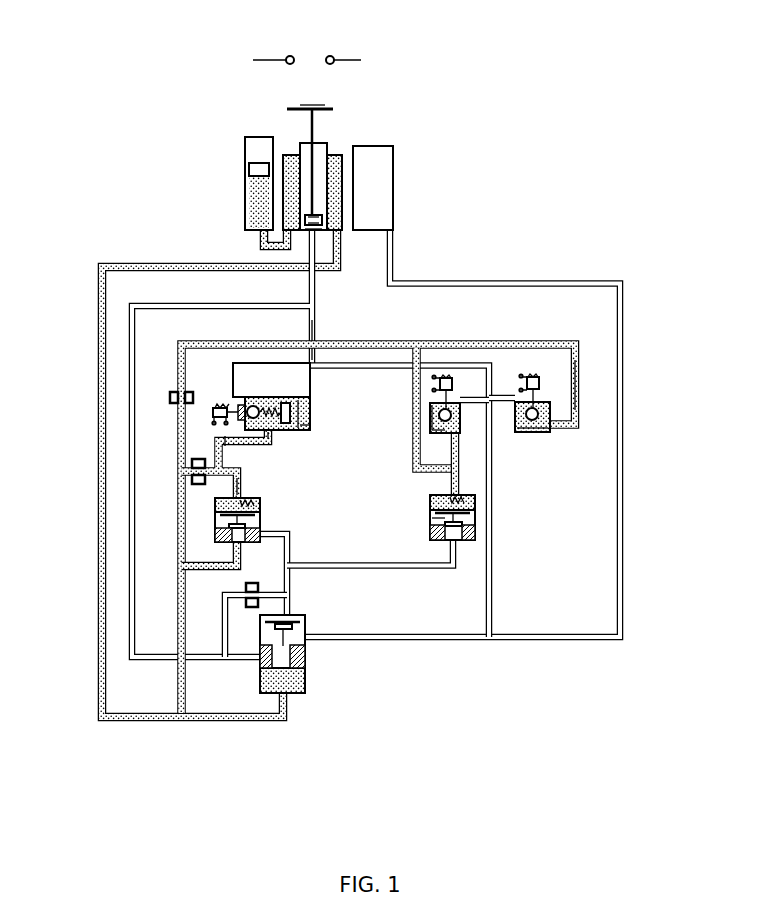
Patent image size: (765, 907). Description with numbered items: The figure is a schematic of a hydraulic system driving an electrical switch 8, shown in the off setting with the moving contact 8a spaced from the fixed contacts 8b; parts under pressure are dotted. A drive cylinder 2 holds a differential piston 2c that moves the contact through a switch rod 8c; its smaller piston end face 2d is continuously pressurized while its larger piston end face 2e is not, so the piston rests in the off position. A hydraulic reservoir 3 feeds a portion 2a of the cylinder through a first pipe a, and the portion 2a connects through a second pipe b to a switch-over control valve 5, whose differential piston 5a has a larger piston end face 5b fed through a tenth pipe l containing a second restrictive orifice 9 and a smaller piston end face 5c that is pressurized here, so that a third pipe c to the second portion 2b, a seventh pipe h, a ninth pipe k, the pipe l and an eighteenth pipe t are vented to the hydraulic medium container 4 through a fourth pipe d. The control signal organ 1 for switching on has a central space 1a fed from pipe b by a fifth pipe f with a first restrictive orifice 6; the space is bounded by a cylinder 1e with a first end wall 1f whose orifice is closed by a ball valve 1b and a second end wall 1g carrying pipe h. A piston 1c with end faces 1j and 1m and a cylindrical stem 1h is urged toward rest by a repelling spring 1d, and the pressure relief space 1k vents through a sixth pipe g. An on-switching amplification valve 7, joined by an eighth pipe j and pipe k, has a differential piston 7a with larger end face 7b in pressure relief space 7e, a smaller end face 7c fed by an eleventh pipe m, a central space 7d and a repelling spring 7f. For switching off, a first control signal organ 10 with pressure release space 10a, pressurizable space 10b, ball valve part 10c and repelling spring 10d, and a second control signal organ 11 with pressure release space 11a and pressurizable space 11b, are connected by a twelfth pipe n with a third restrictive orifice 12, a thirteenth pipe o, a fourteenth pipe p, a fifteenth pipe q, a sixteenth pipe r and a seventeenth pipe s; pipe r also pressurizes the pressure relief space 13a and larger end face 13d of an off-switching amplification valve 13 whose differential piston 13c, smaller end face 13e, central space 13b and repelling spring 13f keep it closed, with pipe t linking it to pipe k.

The control signal organ 1 is at (247, 392).
The central space 1a is at (254, 403).
The ball valve 1b is at (243, 397).
The piston 1c is at (303, 398).
The repelling spring 1d is at (270, 400).
The cylinder 1e is at (266, 440).
The first end wall 1f is at (240, 418).
The second end wall 1g is at (292, 402).
The cylindrical stem 1h is at (272, 446).
The piston end face 1j is at (303, 427).
The pressure relief space 1k is at (212, 412).
The end face 1m is at (290, 432).
The drive cylinder 2 is at (325, 150).
The portion of drive cylinder 2a is at (298, 152).
The second portion of drive cylinder 2b is at (322, 225).
The differential piston 2c is at (320, 221).
The smaller piston end face 2d is at (318, 218).
The larger piston end face 2e is at (320, 231).
The hydraulic reservoir 3 is at (249, 140).
The hydraulic medium container 4 is at (372, 147).
The switch-over control valve 5 is at (303, 652).
The differential piston 5a is at (306, 656).
The larger piston end face 5b is at (300, 622).
The smaller piston end face 5c is at (306, 682).
The first restrictive orifice 6 is at (191, 468).
The on-switching amplification valve 7 is at (219, 527).
The differential piston 7a is at (262, 516).
The larger piston end face 7b is at (222, 514).
The smaller piston end face 7c is at (222, 536).
The central space 7d is at (225, 526).
The pressure relief space 7e is at (258, 506).
The repelling spring 7f is at (245, 503).
The electrical switch 8 is at (388, 100).
The moving contact 8a is at (326, 108).
The fixed contacts 8b is at (287, 56).
The switch rod 8c is at (311, 130).
The second restrictive orifice 9 is at (253, 604).
The first control signal organ 10 is at (443, 380).
The pressure release space 10a is at (457, 402).
The pressurizable space 10b is at (436, 414).
The ball valve part 10c is at (432, 405).
The repelling spring 10d is at (432, 431).
The second control signal organ 11 is at (599, 400).
The pressure release space 11a is at (552, 407).
The pressurizable space 11b is at (552, 428).
The third restrictive orifice 12 is at (172, 392).
The off-switching amplification valve 13 is at (454, 516).
The pressure relief space 13a is at (470, 503).
The central space 13b is at (465, 520).
The differential piston 13c is at (435, 518).
The larger piston end face 13d is at (432, 506).
The smaller piston end face 13e is at (430, 536).
The repelling spring 13f is at (472, 497).
The first pipe a is at (258, 246).
The second pipe b is at (141, 265).
The third pipe c is at (313, 247).
The fourth pipe d is at (393, 247).
The fifth pipe f is at (222, 462).
The sixth pipe g is at (345, 362).
The seventh pipe h is at (316, 322).
The eighth pipe j is at (232, 487).
The ninth pipe k is at (289, 540).
The tenth pipe l is at (271, 593).
The eleventh pipe m is at (226, 563).
The twelfth pipe n is at (192, 344).
The thirteenth pipe o is at (470, 404).
The fourteenth pipe p is at (500, 398).
The fifteenth pipe q is at (414, 360).
The sixteenth pipe r is at (459, 448).
The seventeenth pipe s is at (560, 344).
The eighteenth pipe t is at (457, 562).